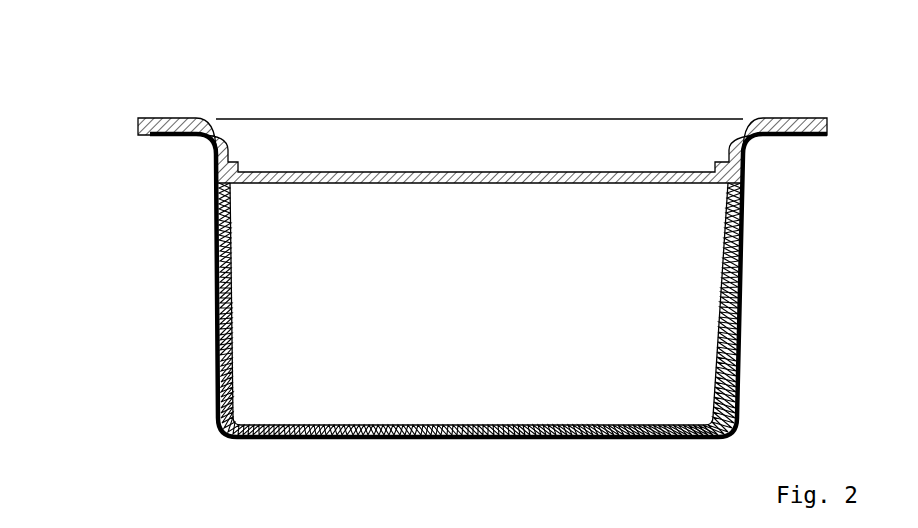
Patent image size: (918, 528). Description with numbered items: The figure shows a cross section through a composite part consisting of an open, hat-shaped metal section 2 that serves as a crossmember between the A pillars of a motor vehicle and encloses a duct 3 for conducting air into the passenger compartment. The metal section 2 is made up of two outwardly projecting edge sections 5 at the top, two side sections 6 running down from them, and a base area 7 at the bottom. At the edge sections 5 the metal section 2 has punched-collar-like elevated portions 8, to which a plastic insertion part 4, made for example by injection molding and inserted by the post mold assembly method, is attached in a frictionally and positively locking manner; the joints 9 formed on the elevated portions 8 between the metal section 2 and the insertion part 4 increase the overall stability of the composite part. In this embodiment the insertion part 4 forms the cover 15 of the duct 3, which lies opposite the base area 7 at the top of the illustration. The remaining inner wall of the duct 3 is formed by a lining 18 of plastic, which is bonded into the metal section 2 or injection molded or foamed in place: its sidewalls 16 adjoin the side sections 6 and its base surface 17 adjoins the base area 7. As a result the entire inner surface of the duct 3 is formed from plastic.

The metal section 2 is at (218, 347).
The duct 3 is at (257, 311).
The insertion part 4 is at (422, 172).
The edge sections 5 is at (174, 134).
The side sections 6 is at (220, 247).
The base area 7 is at (508, 440).
The elevated portions 8 is at (158, 127).
The joints 9 is at (136, 131).
The cover 15 is at (548, 172).
The sidewalls 16 is at (227, 250).
The base surface 17 is at (552, 425).
The lining 18 is at (227, 387).